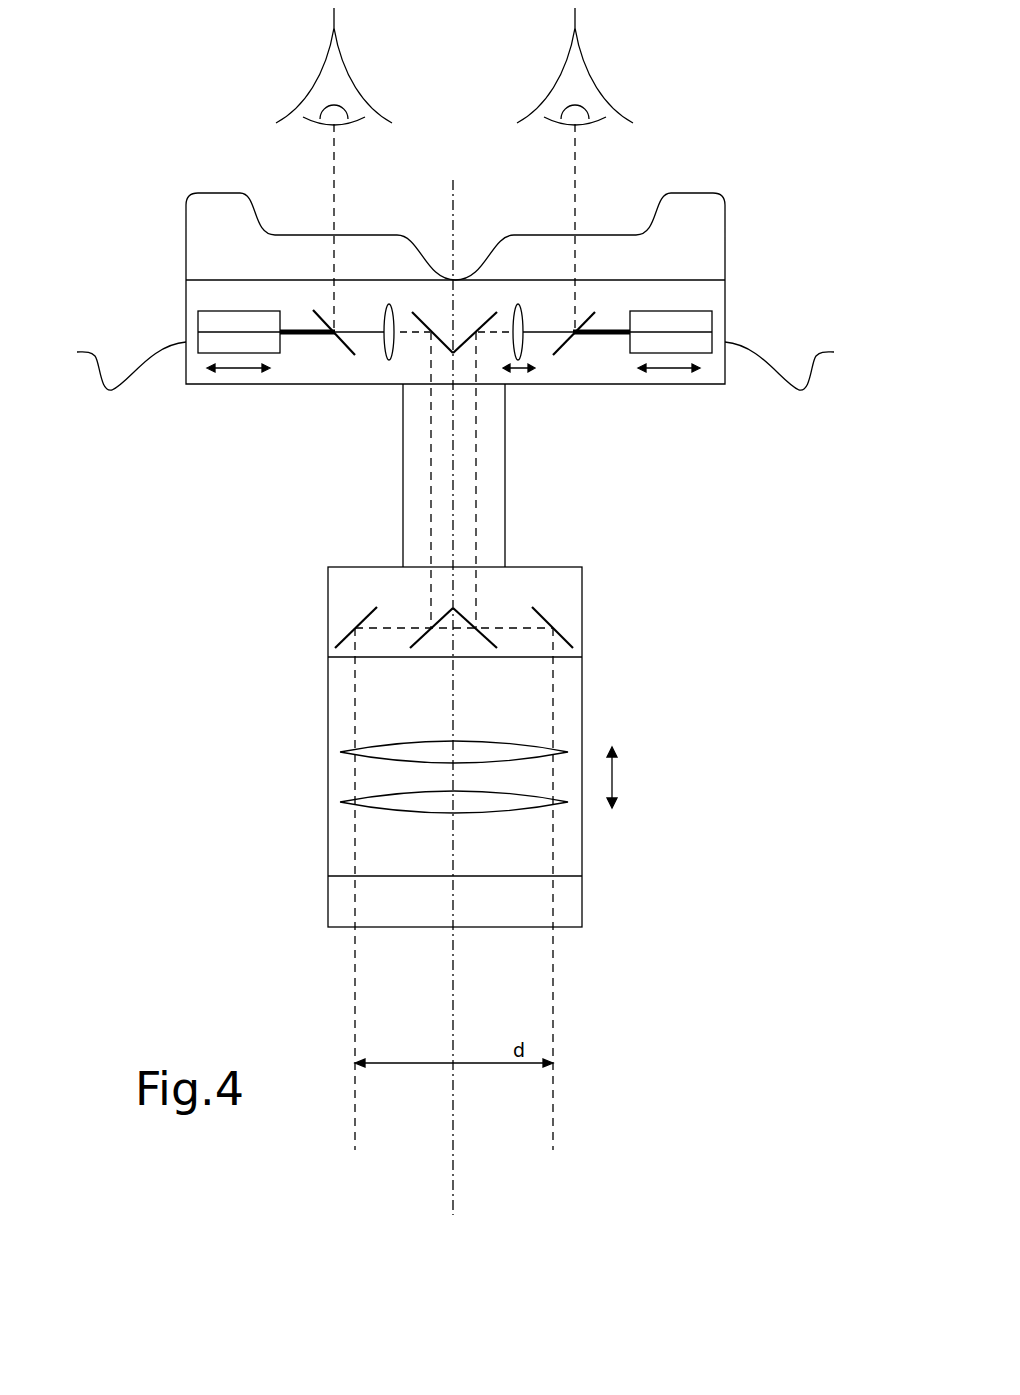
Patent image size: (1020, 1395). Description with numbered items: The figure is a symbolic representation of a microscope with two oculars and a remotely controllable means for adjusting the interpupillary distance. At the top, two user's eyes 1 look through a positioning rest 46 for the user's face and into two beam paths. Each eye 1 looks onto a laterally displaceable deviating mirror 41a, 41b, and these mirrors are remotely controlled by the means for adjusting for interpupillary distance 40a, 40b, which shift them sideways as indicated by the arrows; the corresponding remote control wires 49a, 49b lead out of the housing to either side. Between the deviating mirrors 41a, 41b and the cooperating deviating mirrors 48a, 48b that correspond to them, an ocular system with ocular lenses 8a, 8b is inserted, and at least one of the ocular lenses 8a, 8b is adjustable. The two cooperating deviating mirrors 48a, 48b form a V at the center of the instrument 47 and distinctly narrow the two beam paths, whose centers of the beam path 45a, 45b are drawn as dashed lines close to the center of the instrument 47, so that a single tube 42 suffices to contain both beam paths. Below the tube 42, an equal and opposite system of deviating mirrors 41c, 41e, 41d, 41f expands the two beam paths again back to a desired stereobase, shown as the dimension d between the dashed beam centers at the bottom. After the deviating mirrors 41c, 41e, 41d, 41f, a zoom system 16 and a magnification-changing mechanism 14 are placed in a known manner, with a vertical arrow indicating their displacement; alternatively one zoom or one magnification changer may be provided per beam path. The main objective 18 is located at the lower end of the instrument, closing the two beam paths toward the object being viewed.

The user's eye 1 is at (318, 95).
The positioning rest 46 is at (290, 233).
The means for adjusting for interpupillary distance 40a is at (200, 316).
The means for adjusting for interpupillary distance 40b is at (705, 318).
The deviating mirror 41a is at (325, 322).
The deviating mirror 41b is at (597, 311).
The ocular lens 8a is at (384, 308).
The ocular lens 8b is at (524, 310).
The cooperating deviating mirror 48a is at (410, 312).
The cooperating deviating mirror 48b is at (499, 312).
The remote control wire 49a is at (160, 350).
The remote control wire 49b is at (762, 356).
The tube 42 is at (507, 485).
The center of the beam path 45a is at (430, 452).
The center of the beam path 45b is at (477, 452).
The center of the instrument 47 is at (453, 484).
The deviating mirror 41c is at (340, 643).
The deviating mirror 41e is at (418, 641).
The deviating mirror 41d is at (497, 650).
The deviating mirror 41f is at (577, 643).
The zoom system 16 is at (548, 758).
The magnification-changing mechanism 14 is at (548, 807).
The main objective 18 is at (568, 902).